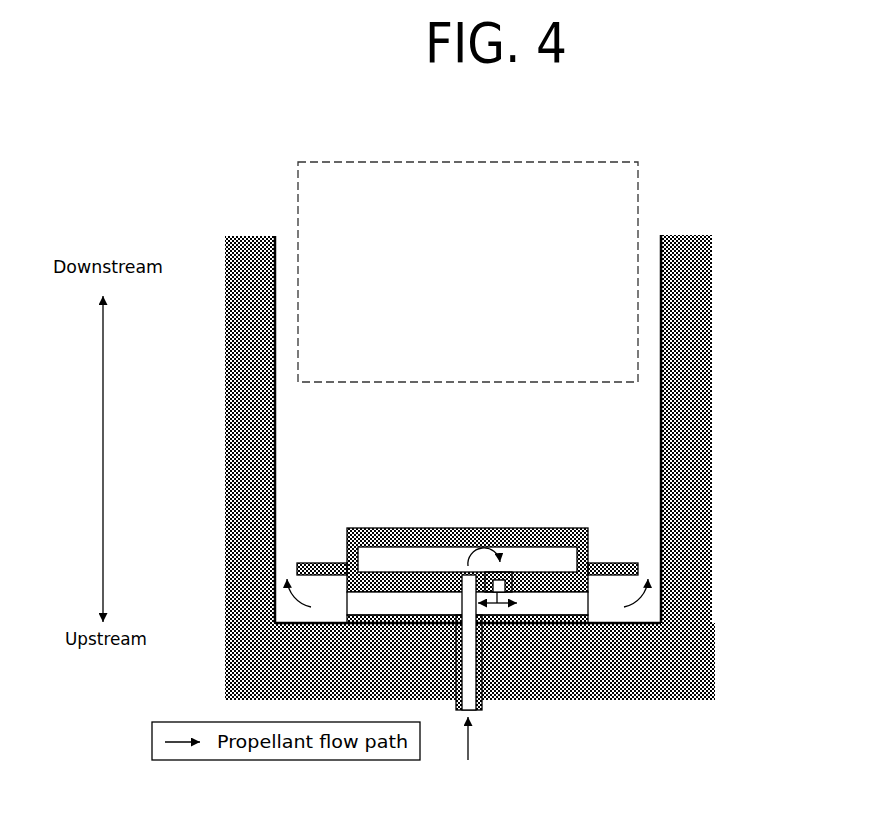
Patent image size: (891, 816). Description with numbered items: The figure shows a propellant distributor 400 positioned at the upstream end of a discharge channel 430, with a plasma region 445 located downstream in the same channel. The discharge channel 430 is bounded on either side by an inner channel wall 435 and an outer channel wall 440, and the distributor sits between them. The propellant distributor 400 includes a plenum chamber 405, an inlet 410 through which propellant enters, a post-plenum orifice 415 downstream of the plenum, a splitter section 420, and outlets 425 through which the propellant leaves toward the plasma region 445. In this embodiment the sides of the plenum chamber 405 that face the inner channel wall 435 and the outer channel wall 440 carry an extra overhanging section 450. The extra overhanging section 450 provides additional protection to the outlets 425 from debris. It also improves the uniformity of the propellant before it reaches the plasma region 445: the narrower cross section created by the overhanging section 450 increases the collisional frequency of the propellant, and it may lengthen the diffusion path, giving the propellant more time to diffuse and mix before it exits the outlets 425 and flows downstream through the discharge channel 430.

The propellant distributor 400 is at (506, 583).
The plenum chamber 405 is at (373, 556).
The inlet 410 is at (490, 718).
The post-plenum orifice 415 is at (503, 562).
The splitter section 420 is at (434, 605).
The outlets 425 is at (593, 618).
The discharge channel 430 is at (675, 223).
The inner channel wall 435 is at (225, 265).
The outer channel wall 440 is at (703, 281).
The plasma region 445 is at (468, 272).
The extra overhanging section 450 is at (310, 562).